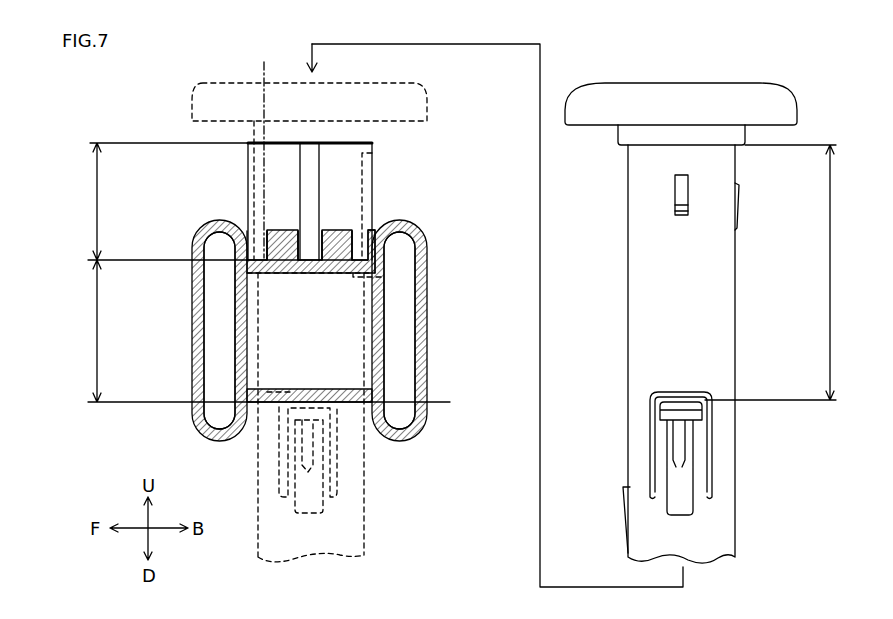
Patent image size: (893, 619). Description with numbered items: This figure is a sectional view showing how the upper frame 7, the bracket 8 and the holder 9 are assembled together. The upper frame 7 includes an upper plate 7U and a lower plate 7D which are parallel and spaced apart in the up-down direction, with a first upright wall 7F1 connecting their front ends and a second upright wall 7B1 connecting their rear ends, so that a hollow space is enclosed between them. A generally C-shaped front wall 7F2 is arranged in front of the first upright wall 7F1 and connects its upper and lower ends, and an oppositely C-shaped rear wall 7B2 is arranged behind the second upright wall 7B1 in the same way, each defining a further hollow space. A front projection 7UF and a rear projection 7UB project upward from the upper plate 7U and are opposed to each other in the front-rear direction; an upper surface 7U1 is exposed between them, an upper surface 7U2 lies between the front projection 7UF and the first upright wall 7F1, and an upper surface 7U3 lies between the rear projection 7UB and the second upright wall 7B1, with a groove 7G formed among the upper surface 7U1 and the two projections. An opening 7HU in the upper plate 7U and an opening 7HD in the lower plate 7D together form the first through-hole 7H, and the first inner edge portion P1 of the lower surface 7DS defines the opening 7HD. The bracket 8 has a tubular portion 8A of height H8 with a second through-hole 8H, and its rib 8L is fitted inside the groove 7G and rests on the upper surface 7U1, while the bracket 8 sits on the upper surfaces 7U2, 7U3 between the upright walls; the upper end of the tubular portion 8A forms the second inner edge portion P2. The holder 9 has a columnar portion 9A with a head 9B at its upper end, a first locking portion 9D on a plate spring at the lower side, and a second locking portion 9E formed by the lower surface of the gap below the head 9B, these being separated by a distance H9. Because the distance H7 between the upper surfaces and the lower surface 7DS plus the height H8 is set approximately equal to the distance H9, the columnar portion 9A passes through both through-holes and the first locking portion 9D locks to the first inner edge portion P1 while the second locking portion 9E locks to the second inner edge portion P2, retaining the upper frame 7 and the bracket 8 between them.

The upper frame 7 is at (182, 241).
The upper plate 7U is at (306, 268).
The upper surface 7U1 is at (357, 258).
The upper surface 7U2 is at (256, 252).
The upper surface 7U3 is at (367, 243).
The front projection 7UF is at (280, 248).
The rear projection 7UB is at (337, 250).
The groove 7G is at (307, 258).
The first through-hole 7H is at (353, 276).
The opening 7HU is at (499, 277).
The opening 7HD is at (267, 392).
The lower plate 7D is at (310, 392).
The lower surface 7DS is at (498, 469).
The first upright wall 7F1 is at (242, 318).
The front wall 7F2 is at (192, 313).
The second upright wall 7B1 is at (387, 340).
The rear wall 7B2 is at (423, 329).
The bracket 8 is at (238, 167).
The tubular portion 8A is at (283, 178).
The rib 8L is at (305, 188).
The second through-hole 8H is at (265, 150).
The holder 9 is at (202, 82).
The columnar portion 9A is at (257, 482).
The head 9B is at (413, 84).
The first locking portion 9D is at (370, 402).
The second locking portion 9E is at (372, 153).
The first inner edge portion P1 is at (308, 398).
The second inner edge portion P2 is at (350, 143).
The distance H7 is at (97, 333).
The height H8 is at (97, 205).
The distance H9 is at (784, 272).